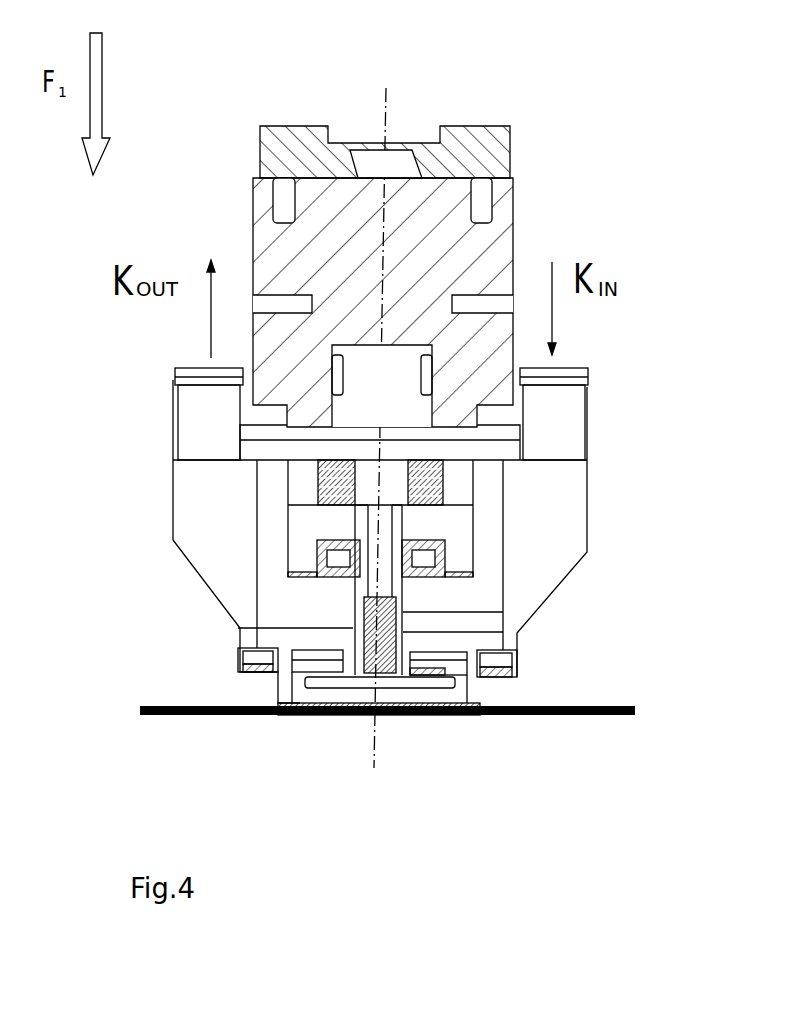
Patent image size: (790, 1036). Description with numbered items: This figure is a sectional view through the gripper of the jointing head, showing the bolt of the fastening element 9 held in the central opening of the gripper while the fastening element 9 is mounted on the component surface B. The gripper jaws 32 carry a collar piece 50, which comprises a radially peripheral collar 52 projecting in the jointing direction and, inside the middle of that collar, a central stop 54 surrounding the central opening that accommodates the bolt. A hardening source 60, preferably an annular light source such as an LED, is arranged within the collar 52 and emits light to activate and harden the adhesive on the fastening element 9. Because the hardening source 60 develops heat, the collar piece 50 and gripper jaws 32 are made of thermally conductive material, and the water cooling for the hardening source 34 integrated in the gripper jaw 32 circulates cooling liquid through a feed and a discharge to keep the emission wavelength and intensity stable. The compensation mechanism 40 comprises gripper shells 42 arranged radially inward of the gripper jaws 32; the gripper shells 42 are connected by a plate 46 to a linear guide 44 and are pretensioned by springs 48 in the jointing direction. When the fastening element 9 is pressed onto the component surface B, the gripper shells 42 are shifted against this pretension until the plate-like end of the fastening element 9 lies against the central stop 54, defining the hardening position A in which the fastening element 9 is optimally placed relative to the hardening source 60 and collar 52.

The fastening element 9 is at (397, 697).
The gripper jaws 32 is at (220, 582).
The water cooling for the hardening source 34 is at (238, 663).
The compensation mechanism 40 is at (460, 558).
The gripper shells 42 is at (405, 609).
The linear guide 44 is at (320, 485).
The plate 46 is at (430, 518).
The spring 48 is at (320, 498).
The collar piece 50 is at (482, 640).
The radially peripheral collar 52 is at (473, 683).
The central stop 54 is at (443, 710).
The hardening source 60 is at (310, 662).
The hardening position A is at (332, 730).
The component surface B is at (218, 708).